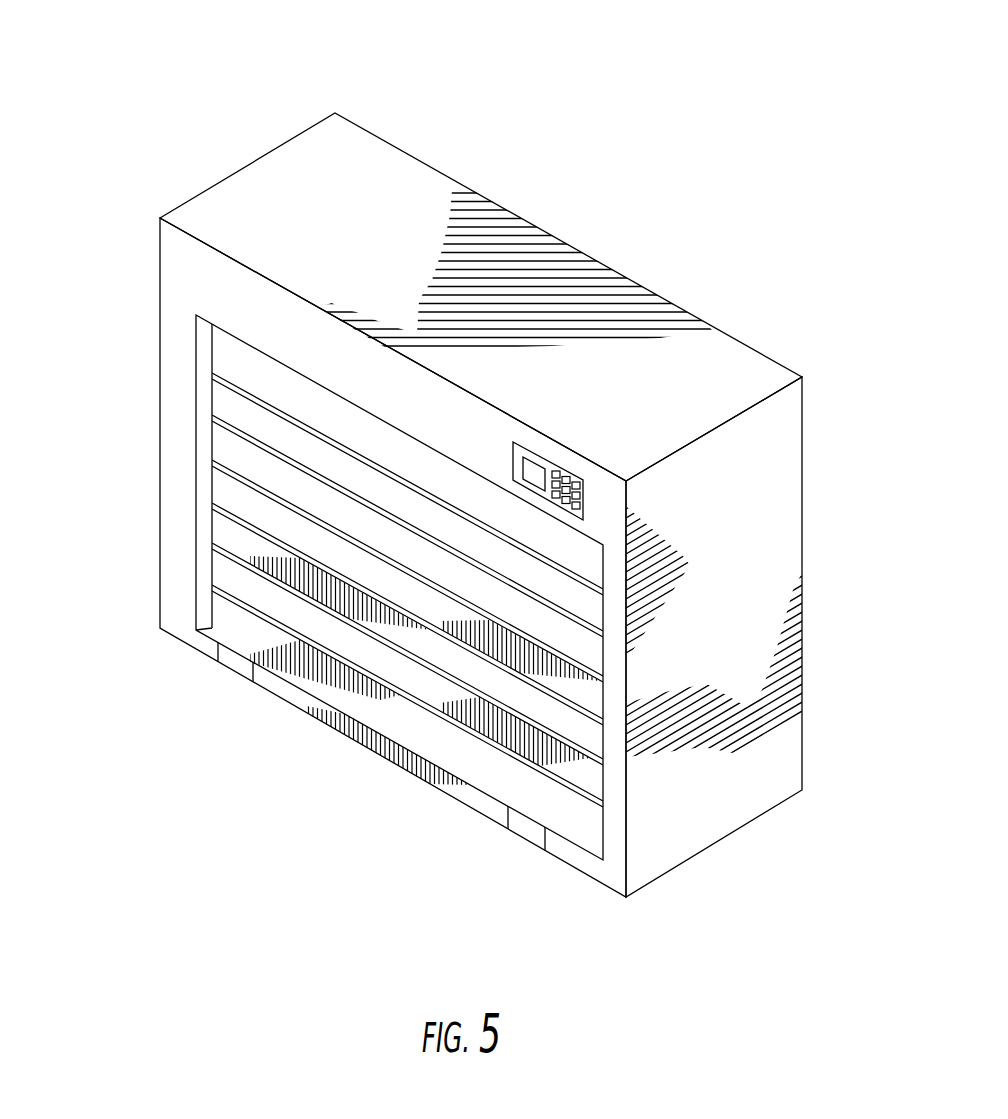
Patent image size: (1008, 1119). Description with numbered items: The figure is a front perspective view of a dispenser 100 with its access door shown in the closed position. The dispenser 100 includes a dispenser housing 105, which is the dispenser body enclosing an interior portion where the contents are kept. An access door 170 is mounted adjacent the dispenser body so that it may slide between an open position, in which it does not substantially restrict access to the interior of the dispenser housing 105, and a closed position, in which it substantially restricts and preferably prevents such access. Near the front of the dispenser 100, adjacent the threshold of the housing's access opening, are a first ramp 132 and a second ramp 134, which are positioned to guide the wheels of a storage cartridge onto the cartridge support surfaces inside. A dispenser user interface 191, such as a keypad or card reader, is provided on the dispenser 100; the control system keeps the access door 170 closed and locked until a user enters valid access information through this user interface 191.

The dispenser 100 is at (494, 460).
The dispenser housing 105 is at (802, 631).
The access door 170 is at (222, 495).
The dispenser user interface 191 is at (544, 458).
The first ramp 132 is at (240, 663).
The second ramp 134 is at (520, 824).